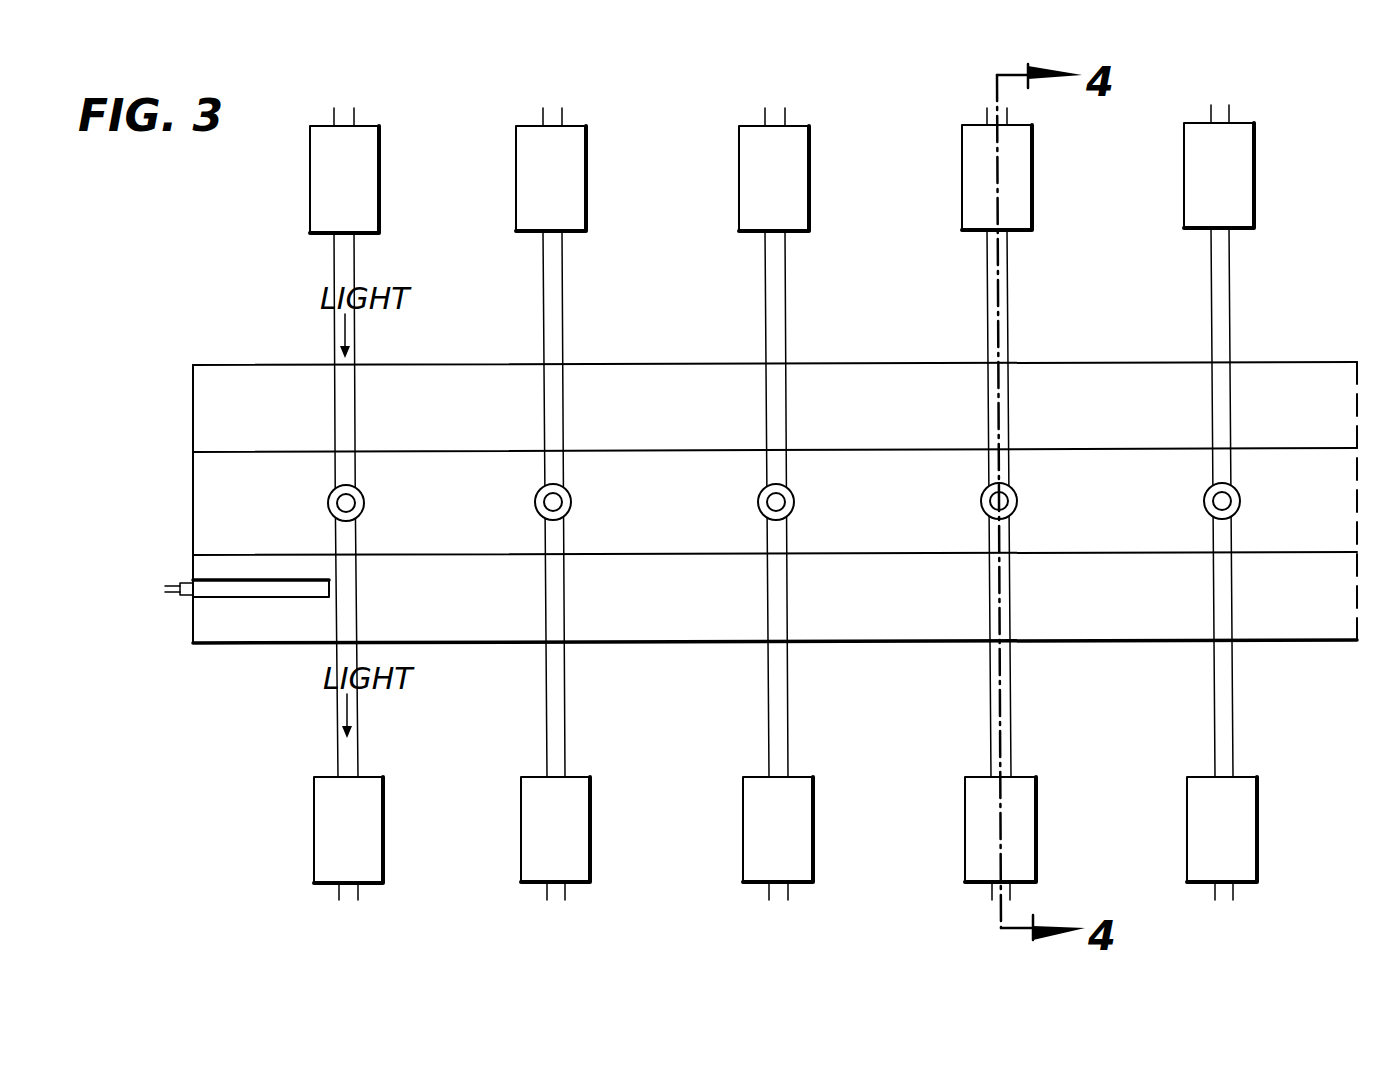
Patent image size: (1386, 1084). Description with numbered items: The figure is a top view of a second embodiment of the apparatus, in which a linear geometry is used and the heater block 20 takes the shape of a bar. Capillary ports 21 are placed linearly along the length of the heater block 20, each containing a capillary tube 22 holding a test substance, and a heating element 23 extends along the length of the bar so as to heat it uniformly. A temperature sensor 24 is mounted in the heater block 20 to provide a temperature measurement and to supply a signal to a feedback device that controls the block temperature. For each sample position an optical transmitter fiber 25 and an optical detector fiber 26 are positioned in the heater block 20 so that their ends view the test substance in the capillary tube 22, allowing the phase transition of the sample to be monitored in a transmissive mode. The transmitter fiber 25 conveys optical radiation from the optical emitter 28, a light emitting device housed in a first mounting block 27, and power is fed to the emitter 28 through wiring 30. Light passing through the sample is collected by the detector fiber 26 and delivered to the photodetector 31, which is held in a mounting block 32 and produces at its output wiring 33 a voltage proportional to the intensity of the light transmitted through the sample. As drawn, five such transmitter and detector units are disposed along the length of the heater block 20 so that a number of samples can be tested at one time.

The heater block 20 is at (298, 362).
The capillary port 21 is at (331, 492).
The capillary tube 22 is at (362, 492).
The heating element 23 is at (428, 555).
The temperature sensor 24 is at (188, 598).
The optical transmitter fiber 25 is at (356, 270).
The optical detector fiber 26 is at (358, 748).
The first mounting block 27 is at (310, 167).
The optical emitter 28 is at (337, 123).
The wiring 30 is at (354, 120).
The photodetector 31 is at (340, 885).
The mounting block 32 is at (314, 822).
The output wiring 33 is at (360, 896).